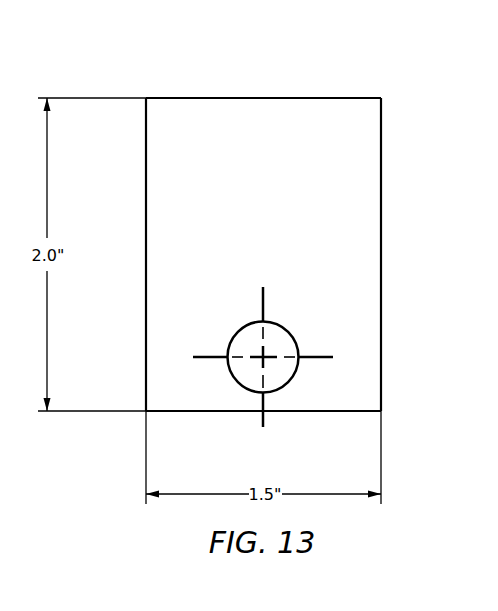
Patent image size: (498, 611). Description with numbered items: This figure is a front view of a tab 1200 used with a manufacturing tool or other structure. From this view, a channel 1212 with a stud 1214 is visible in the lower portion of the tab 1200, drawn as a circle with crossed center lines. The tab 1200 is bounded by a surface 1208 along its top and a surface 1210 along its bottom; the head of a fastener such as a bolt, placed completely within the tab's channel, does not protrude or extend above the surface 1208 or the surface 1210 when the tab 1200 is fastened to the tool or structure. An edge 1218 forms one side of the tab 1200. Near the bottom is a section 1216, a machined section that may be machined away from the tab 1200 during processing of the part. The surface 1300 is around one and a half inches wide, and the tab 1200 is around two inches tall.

The surface 1300 is at (190, 70).
The tab 1200 is at (381, 213).
The surface 1208 is at (283, 97).
The left edge 1218 is at (146, 187).
The section 1216 is at (208, 405).
The surface 1210 is at (312, 405).
The channel 1212 is at (242, 325).
The stud 1214 is at (282, 340).